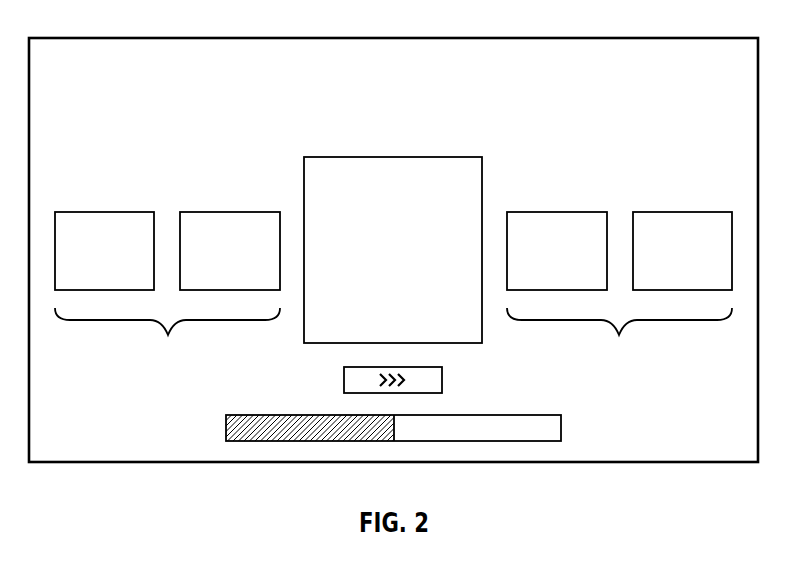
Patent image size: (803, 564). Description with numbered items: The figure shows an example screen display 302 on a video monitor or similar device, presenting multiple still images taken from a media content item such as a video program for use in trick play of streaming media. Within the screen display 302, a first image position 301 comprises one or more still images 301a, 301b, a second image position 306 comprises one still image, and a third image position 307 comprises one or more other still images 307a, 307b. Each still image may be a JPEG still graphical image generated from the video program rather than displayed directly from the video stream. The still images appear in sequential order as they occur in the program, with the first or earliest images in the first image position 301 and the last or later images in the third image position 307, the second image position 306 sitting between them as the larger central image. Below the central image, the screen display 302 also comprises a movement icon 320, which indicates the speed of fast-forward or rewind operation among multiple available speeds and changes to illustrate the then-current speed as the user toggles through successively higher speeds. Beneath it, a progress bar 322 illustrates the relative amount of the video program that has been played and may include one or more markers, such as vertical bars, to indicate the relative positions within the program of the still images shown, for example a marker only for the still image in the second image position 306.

The screen display 302 is at (91, 37).
The first image position 301 is at (167, 337).
The still image 301a is at (104, 211).
The still image 301b is at (230, 211).
The second image position 306 is at (380, 156).
The third image position 307 is at (619, 337).
The still image 307a is at (558, 211).
The still image 307b is at (683, 211).
The movement icon 320 is at (442, 380).
The progress bar 322 is at (561, 428).